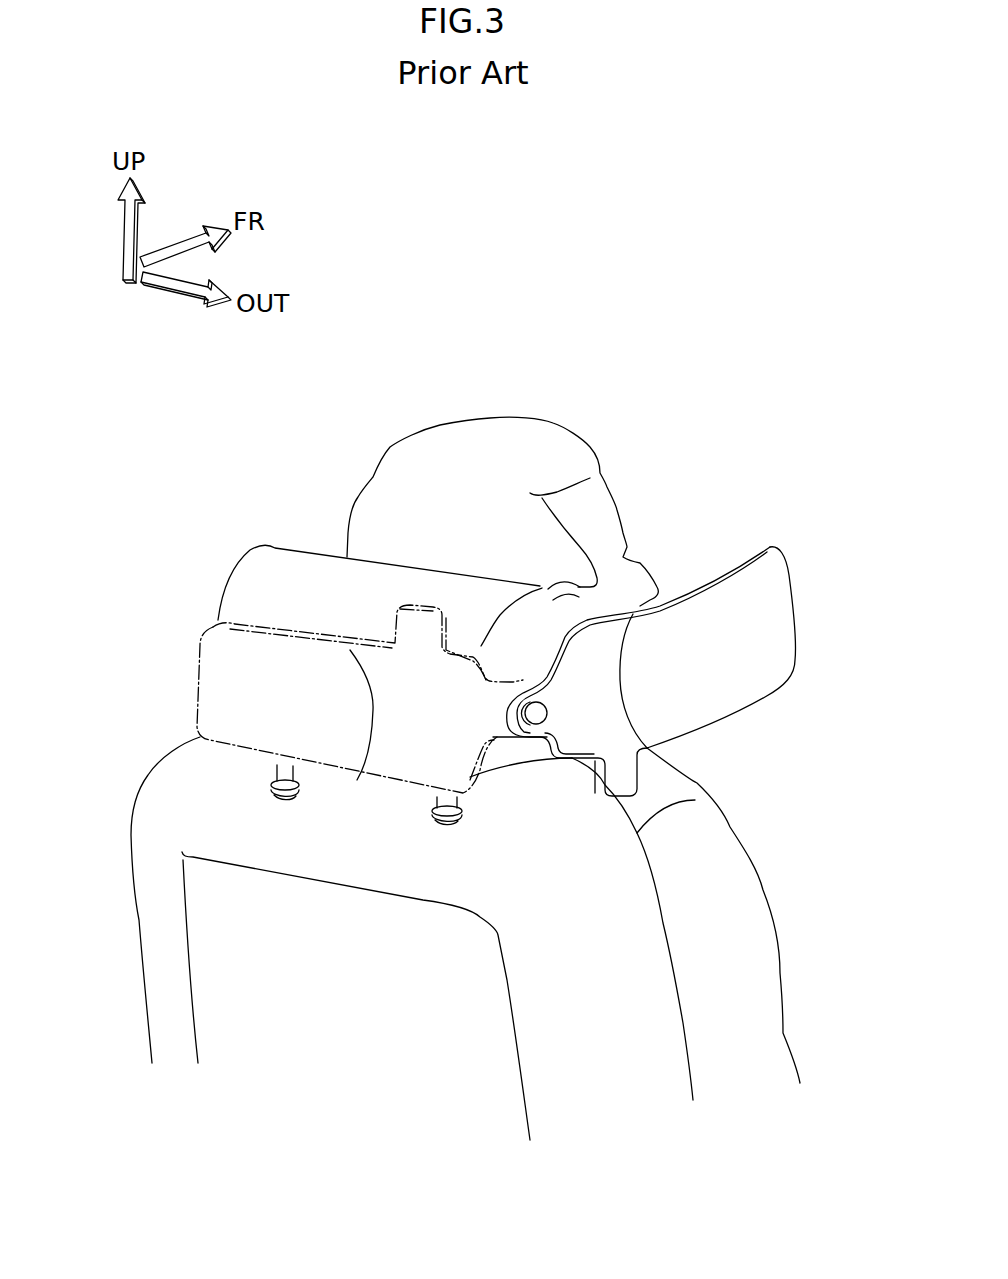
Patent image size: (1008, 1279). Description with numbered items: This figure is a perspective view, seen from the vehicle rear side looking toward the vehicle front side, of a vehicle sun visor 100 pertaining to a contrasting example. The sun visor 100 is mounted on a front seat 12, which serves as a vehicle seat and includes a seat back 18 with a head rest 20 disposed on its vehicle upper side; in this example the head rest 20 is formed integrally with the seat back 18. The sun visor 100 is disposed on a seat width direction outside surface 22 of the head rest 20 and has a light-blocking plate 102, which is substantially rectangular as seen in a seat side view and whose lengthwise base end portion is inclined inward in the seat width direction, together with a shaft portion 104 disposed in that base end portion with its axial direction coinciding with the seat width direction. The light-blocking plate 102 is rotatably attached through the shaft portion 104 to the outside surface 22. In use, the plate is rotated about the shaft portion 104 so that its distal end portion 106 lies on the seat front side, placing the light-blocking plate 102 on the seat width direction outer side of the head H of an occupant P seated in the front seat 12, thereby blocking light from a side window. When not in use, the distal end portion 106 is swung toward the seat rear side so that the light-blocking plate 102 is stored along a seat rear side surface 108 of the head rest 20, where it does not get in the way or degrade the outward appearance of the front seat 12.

The front seat 12 is at (330, 636).
The head rest 20 is at (289, 566).
The seat rear side surface 108 is at (242, 610).
The seat width direction outside surface 22 is at (517, 648).
The head H is at (531, 430).
The sun visor 100 is at (683, 661).
The distal end portion 106 is at (778, 621).
The light-blocking plate 102 is at (722, 657).
The shaft portion 104 is at (542, 713).
The seat back 18 is at (147, 832).
The occupant P is at (735, 846).